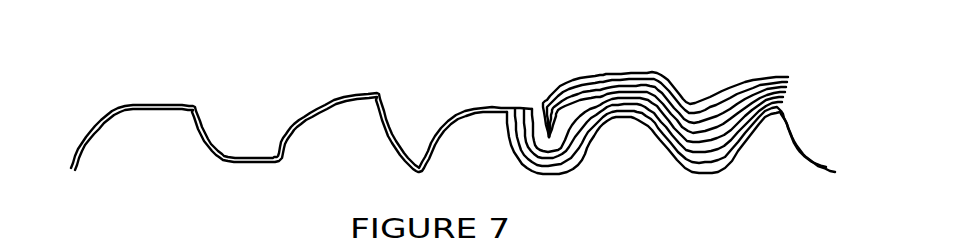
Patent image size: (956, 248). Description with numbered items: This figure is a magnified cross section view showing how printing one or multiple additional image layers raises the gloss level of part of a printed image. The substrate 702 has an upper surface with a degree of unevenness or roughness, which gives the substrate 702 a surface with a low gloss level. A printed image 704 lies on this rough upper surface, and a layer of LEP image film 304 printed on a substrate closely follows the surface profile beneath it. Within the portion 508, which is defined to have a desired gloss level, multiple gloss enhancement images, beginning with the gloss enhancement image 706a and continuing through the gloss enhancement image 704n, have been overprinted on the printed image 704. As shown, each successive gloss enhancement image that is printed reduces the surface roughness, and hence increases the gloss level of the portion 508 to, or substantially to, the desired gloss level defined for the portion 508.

The LEP image film 304 is at (146, 104).
The portion 508 is at (687, 80).
The substrate 702 is at (668, 156).
The printed image 704 is at (790, 132).
The gloss enhancement image 704n is at (722, 95).
The gloss enhancement image 706a is at (786, 104).